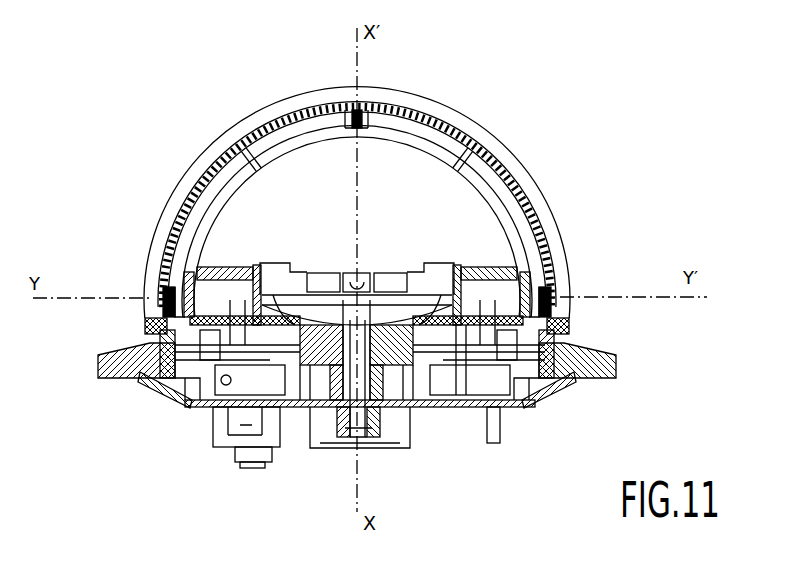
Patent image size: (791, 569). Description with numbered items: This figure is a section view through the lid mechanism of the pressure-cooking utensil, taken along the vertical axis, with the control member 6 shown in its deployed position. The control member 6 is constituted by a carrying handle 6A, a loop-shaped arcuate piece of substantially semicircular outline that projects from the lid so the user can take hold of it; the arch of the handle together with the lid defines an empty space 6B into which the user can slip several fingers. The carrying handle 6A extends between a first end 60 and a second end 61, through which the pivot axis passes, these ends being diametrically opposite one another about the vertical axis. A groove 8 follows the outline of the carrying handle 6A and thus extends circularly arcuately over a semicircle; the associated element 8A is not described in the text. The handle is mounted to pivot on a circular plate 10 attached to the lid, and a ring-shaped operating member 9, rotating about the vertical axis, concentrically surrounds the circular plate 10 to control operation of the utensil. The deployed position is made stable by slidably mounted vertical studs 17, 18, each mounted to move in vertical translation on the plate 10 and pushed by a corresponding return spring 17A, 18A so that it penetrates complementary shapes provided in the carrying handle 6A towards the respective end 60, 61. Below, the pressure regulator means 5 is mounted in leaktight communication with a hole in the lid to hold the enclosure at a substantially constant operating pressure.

The pressure regulator means 5 is at (386, 450).
The control member 6 is at (537, 175).
The carrying handle 6A is at (197, 172).
The empty space 6B is at (357, 213).
The groove 8 is at (477, 130).
The dome ring 8A is at (262, 104).
The operating member 9 is at (100, 355).
The circular plate 10 is at (468, 262).
The vertical stud 17 is at (145, 380).
The return spring 17A is at (157, 384).
The vertical stud 18 is at (567, 380).
The return spring 18A is at (537, 397).
The first end 60 is at (158, 305).
The second end 61 is at (556, 300).